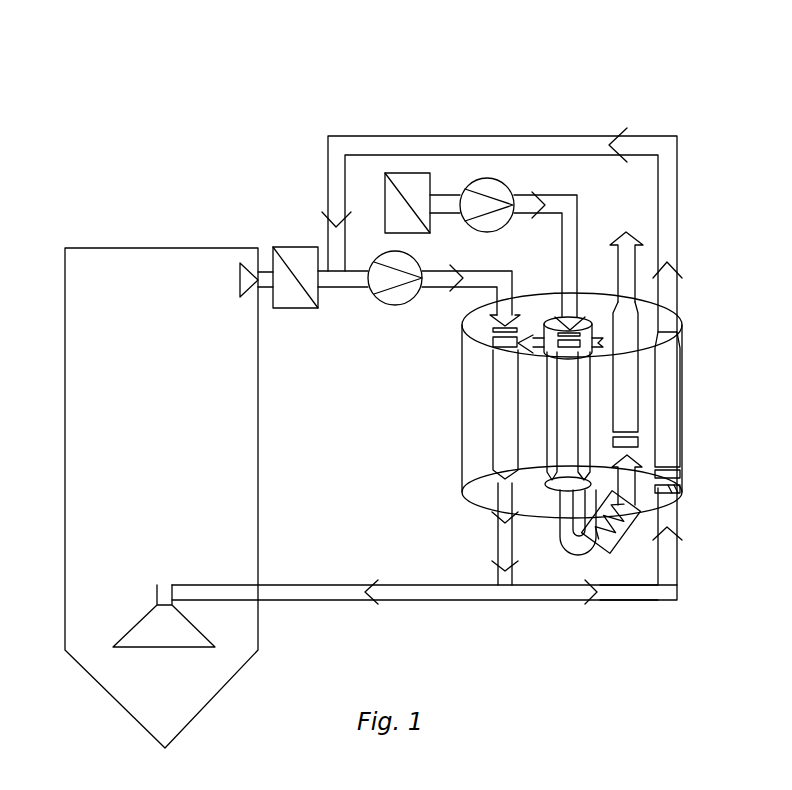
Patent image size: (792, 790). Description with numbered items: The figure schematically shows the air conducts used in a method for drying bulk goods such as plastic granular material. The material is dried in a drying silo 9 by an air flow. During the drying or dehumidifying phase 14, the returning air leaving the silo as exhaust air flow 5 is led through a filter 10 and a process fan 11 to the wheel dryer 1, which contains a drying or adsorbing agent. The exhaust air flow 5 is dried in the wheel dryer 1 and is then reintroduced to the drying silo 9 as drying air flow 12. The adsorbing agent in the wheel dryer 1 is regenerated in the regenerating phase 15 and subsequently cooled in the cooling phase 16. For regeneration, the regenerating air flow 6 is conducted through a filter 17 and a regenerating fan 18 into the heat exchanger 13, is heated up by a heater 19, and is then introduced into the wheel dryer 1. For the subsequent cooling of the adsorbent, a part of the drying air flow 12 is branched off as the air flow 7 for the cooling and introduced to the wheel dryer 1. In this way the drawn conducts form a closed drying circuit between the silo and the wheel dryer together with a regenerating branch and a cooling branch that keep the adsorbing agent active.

The wheel dryer 1 is at (700, 339).
The exhaust air flow 5 is at (258, 275).
The regenerating air flow 6 is at (565, 205).
The air flow for the cooling 7 is at (628, 590).
The drying silo 9 is at (228, 507).
The filter 10 is at (298, 263).
The process fan 11 is at (402, 298).
The drying air flow 12 is at (502, 535).
The heat exchanger 13 is at (568, 393).
The drying or dehumidifying phase 14 is at (502, 413).
The regenerating phase 15 is at (625, 377).
The cooling phase 16 is at (665, 417).
The filter 17 is at (415, 183).
The regenerating fan 18 is at (495, 185).
The heater 19 is at (587, 548).